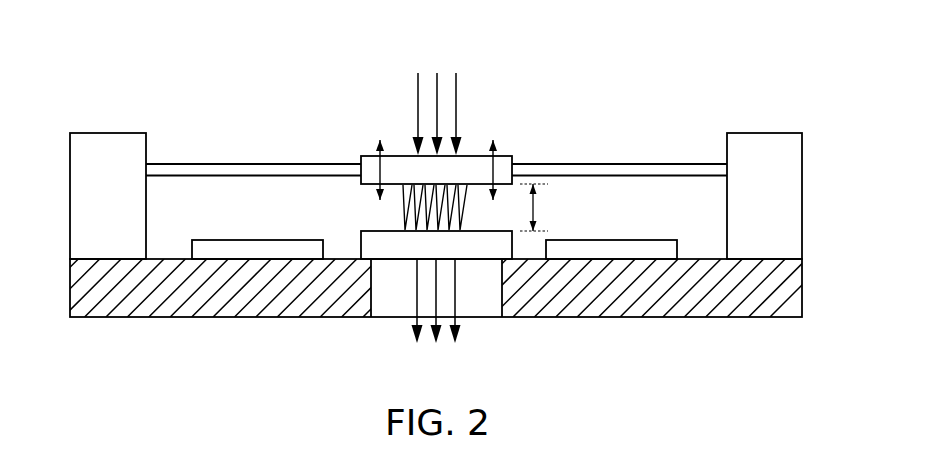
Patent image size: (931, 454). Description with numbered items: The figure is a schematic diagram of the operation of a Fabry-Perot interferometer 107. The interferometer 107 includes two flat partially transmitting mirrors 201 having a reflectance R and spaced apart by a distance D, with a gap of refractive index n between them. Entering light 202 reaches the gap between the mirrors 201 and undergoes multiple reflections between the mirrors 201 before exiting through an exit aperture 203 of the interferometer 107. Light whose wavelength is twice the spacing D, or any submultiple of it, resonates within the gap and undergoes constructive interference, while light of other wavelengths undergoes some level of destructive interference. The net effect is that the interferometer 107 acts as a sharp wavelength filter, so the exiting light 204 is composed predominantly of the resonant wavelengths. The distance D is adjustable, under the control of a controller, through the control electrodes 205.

The tunable optical filter device 107 is at (112, 82).
The mirror plates (Fabry-Perot cavity) 201 is at (361, 183).
The incident light 202 is at (430, 105).
The opening in substrate 203 is at (388, 307).
The transmitted light 204 is at (445, 288).
The electrodes 205 is at (260, 250).